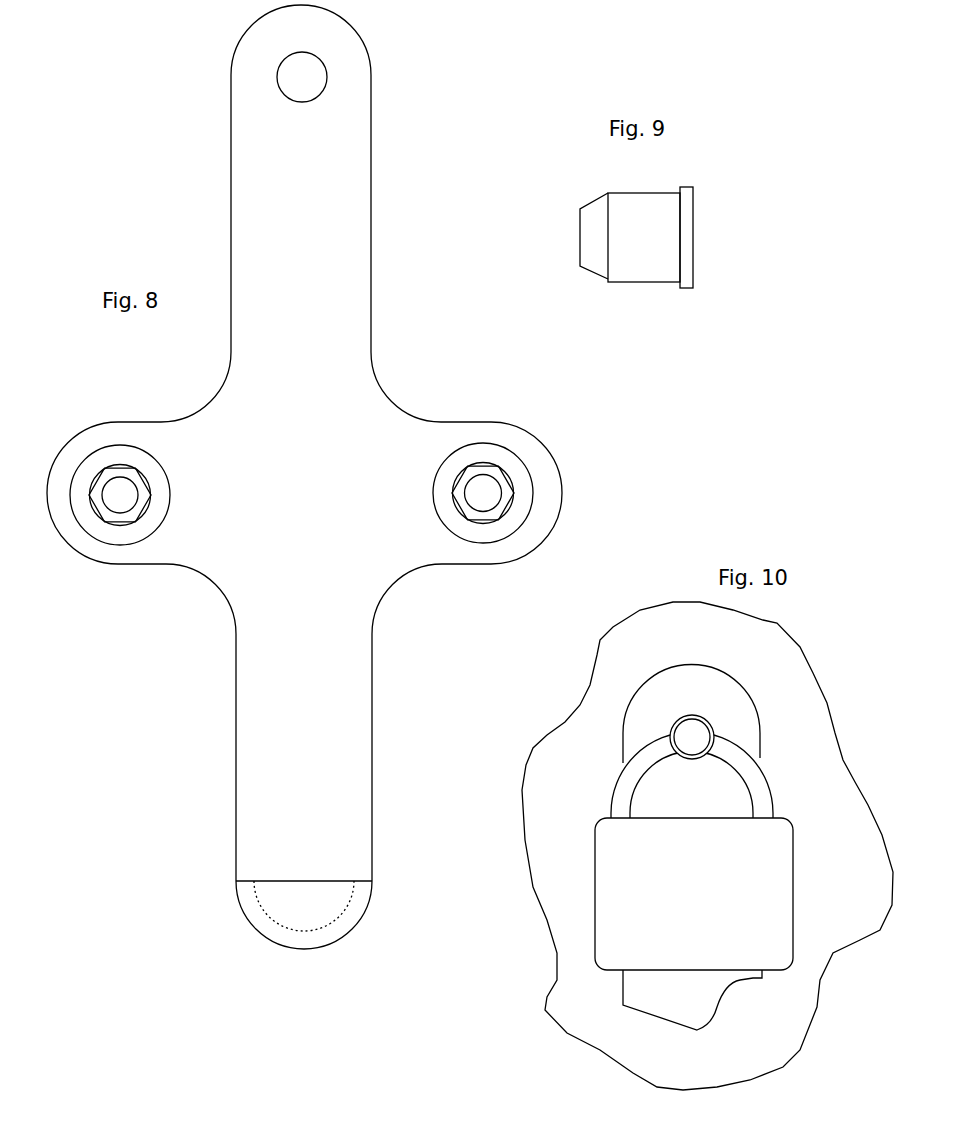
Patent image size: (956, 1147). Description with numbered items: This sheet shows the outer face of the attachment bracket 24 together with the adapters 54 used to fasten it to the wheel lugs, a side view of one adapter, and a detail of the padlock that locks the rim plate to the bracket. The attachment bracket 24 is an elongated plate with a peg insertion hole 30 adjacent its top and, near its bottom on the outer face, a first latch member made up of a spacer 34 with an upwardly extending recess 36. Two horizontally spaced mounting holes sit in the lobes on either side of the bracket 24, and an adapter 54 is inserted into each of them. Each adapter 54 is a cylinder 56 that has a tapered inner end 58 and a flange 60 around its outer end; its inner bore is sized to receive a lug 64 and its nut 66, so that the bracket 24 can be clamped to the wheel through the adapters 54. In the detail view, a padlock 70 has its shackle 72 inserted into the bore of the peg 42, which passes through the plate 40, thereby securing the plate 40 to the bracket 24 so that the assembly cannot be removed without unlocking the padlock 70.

In FIG. 8, the attachment bracket 24 is at (293, 268).
In FIG. 10, the attachment bracket 24 is at (638, 721).
In FIG. 8, the peg insertion hole 30 is at (300, 77).
In FIG. 8, the spacer 34 is at (261, 922).
In FIG. 8, the upwardly extending recess 36 is at (322, 901).
In FIG. 10, the plate 40 is at (568, 768).
In FIG. 10, the peg 42 is at (692, 737).
In FIG. 8, the adapter 54 is at (523, 472).
In FIG. 9, the adapter 54 is at (623, 255).
In FIG. 9, the cylinder 56 is at (652, 252).
In FIG. 9, the tapered inner end 58 is at (595, 237).
In FIG. 9, the flange 60 is at (690, 210).
In FIG. 8, the lug 64 is at (483, 493).
In FIG. 8, the nut 66 is at (497, 512).
In FIG. 10, the padlock 70 is at (683, 896).
In FIG. 10, the shackle 72 is at (758, 778).